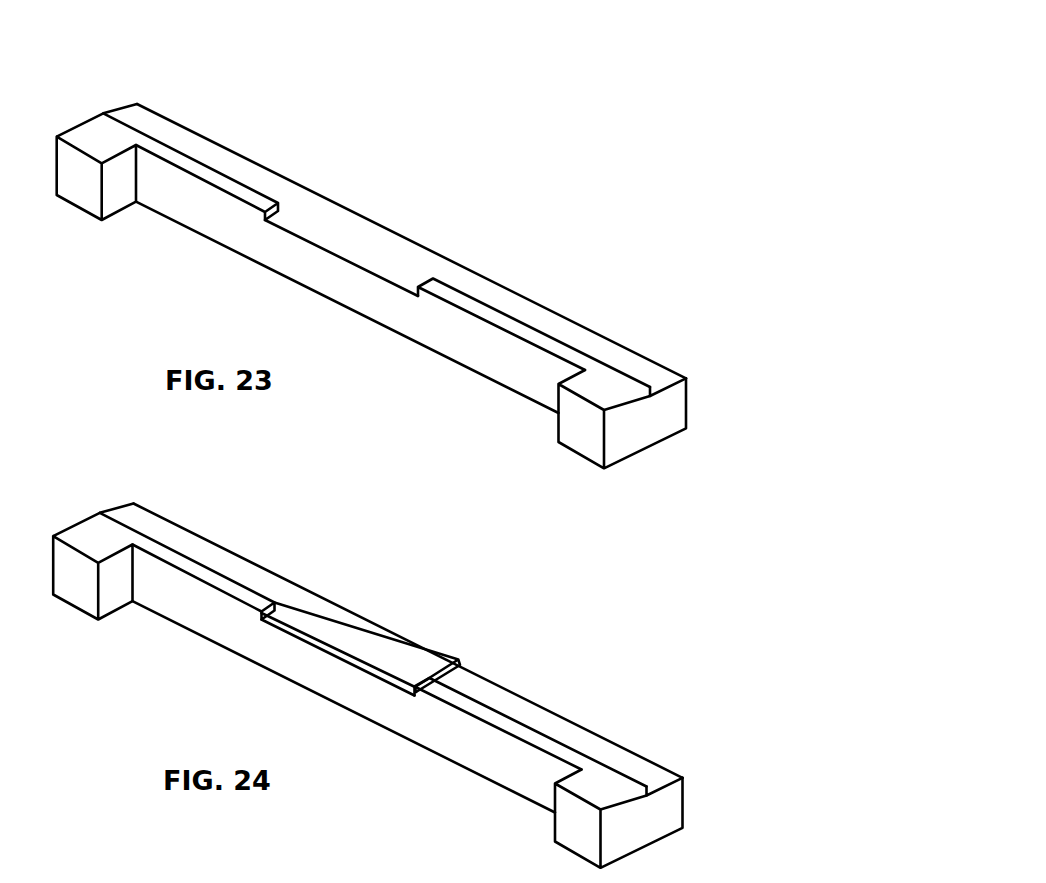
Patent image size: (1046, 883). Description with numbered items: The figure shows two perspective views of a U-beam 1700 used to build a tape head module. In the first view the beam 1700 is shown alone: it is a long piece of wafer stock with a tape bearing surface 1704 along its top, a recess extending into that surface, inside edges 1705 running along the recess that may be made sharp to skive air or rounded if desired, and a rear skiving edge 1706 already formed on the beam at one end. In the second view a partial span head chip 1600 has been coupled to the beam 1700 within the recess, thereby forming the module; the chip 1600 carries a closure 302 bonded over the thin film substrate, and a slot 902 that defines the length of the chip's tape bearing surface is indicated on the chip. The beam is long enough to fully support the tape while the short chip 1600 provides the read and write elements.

In FIG. 23, the U-beam 1700 is at (148, 110).
In FIG. 24, the U-beam 1700 is at (145, 508).
In FIG. 23, the tape bearing surface 1704 is at (490, 306).
In FIG. 24, the tape bearing surface 1704 is at (487, 710).
In FIG. 23, the inside edges 1705 is at (458, 306).
In FIG. 24, the inside edges 1705 is at (454, 706).
In FIG. 23, the skiving edge 1706 is at (650, 388).
In FIG. 24, the skiving edge 1706 is at (646, 772).
In FIG. 24, the chip 1600 is at (405, 656).
In FIG. 24, the closure 302 is at (344, 657).
In FIG. 24, the slot 902 is at (304, 592).